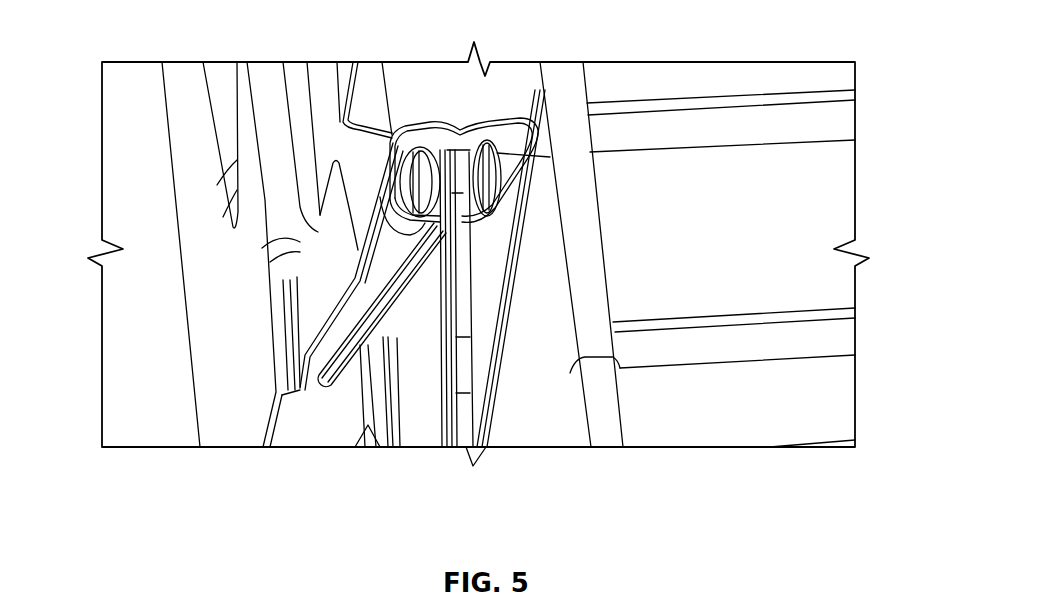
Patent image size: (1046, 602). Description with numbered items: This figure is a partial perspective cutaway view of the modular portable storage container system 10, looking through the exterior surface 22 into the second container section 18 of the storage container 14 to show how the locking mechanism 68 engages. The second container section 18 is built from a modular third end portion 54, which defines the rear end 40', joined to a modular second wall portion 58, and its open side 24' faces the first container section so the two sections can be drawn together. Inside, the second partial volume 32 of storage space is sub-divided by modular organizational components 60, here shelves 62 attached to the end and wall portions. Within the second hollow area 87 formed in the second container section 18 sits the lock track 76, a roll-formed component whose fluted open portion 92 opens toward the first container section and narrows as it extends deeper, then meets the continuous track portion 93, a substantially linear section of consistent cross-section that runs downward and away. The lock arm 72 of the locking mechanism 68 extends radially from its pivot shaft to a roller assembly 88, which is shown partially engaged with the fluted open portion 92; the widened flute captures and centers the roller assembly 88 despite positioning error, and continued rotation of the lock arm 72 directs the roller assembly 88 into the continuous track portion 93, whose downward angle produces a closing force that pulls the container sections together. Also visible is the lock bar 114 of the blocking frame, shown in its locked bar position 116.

The modular portable storage container system 10 is at (123, 141).
The storage container 14 is at (833, 177).
The second container section 18 is at (212, 317).
The second wall 22 is at (220, 383).
The open side 24' is at (873, 203).
The second partial volume 32 is at (710, 250).
The rear end 40' is at (318, 266).
The third end portion 54 is at (224, 284).
The second wall portion 58 is at (833, 413).
The modular organizational components 60 is at (837, 123).
The shelves 62 is at (755, 231).
The locking mechanism 68 is at (482, 419).
The lock arm 72 is at (462, 267).
The lock track 76 is at (439, 258).
The second hollow area 87 is at (403, 88).
The roller assembly 88 is at (418, 135).
The fluted open portion 92 is at (490, 125).
The continuous track portion 93 is at (360, 343).
The lock bar 114 is at (602, 229).
The locked bar position 116 is at (572, 120).